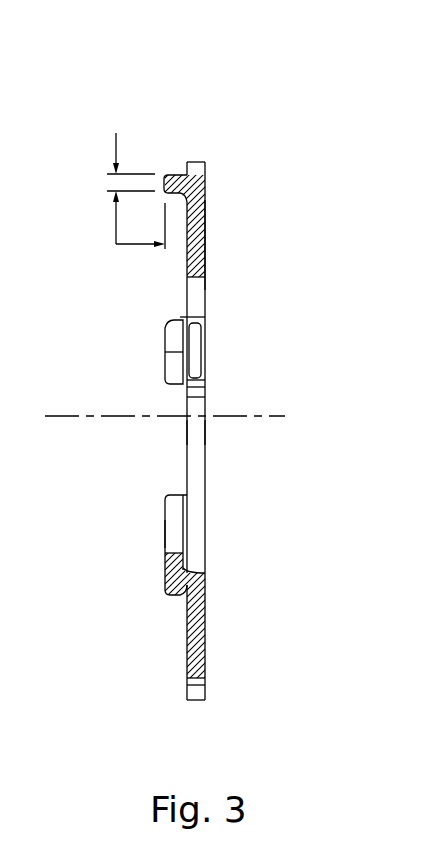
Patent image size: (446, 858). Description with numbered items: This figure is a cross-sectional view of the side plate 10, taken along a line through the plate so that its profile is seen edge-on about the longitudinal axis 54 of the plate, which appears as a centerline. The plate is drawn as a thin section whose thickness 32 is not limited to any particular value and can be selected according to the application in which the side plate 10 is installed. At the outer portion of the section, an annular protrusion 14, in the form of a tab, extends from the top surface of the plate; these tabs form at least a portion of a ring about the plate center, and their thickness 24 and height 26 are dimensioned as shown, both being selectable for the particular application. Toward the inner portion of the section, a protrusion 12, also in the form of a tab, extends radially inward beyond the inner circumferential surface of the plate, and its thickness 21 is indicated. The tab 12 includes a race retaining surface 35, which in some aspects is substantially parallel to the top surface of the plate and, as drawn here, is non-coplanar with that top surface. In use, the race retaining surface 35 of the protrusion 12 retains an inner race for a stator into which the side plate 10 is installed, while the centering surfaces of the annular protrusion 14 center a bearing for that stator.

The side plate 10 is at (112, 68).
The protrusion 12 is at (164, 505).
The annular protrusion 14 is at (175, 173).
The thickness 21 is at (235, 534).
The thickness 24 is at (135, 178).
The height 26 is at (214, 244).
The thickness 32 is at (138, 433).
The race retaining surface 35 is at (183, 512).
The longitudinal axis 54 is at (120, 416).